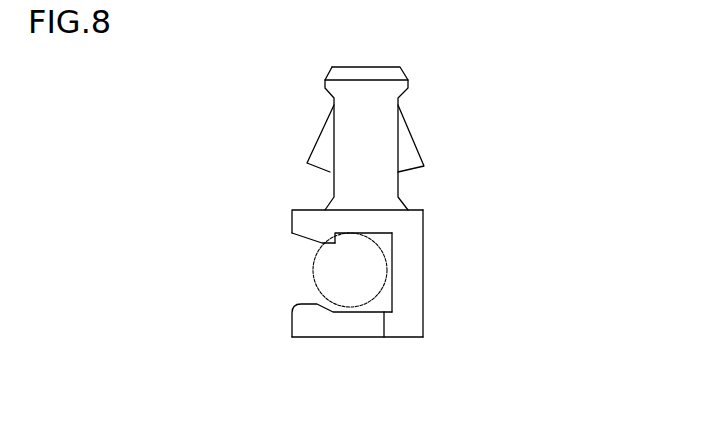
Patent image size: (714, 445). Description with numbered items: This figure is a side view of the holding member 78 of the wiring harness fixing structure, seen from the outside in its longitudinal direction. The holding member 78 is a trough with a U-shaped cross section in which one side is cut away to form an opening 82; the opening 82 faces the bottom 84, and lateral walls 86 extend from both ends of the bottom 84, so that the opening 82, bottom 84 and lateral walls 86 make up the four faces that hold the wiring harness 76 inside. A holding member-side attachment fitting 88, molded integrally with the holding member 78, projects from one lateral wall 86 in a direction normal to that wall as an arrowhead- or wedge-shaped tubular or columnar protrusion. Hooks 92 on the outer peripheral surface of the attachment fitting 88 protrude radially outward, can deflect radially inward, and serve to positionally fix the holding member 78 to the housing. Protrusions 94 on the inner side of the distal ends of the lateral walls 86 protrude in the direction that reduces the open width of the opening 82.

The wiring harness 76 is at (338, 268).
The holding member 78 is at (587, 194).
The opening 82 is at (377, 270).
The bottom 84 is at (410, 290).
The lateral wall 86 is at (348, 222).
The holding member-side attachment fitting 88 is at (326, 81).
The hook 92 is at (408, 153).
The protrusion 94 is at (322, 231).